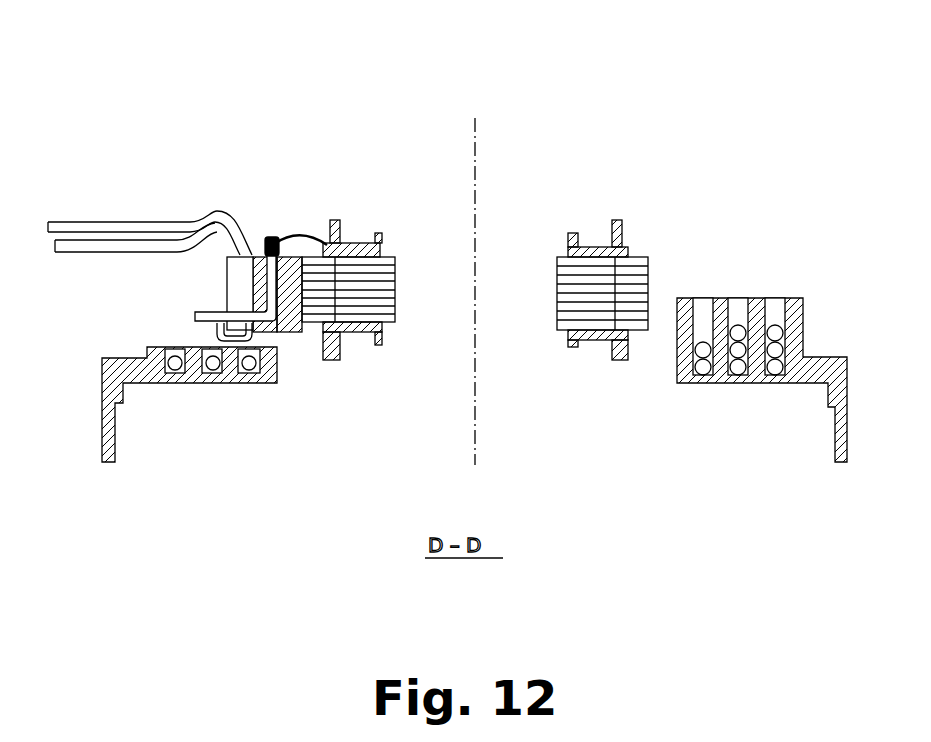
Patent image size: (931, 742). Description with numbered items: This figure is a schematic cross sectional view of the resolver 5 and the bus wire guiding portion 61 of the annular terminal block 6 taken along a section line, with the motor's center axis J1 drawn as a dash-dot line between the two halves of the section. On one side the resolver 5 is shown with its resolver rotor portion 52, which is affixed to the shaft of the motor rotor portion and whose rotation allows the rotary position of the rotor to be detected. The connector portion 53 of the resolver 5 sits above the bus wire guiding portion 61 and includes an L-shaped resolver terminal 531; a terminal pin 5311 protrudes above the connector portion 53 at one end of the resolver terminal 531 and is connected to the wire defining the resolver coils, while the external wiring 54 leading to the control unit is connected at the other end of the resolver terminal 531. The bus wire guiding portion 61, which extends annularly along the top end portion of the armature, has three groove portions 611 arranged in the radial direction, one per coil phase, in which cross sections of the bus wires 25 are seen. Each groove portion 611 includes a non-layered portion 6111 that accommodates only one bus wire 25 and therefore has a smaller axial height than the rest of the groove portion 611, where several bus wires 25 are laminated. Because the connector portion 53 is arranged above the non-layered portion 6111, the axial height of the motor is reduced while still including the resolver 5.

The resolver 5 is at (238, 234).
The resolver rotor portion 52 is at (350, 213).
The connector portion 53 is at (266, 260).
The resolver terminal 531 is at (280, 317).
The terminal pin 5311 is at (272, 237).
The external wiring 54 is at (75, 232).
The non-layered portion 6111 is at (173, 343).
The bus wire 25 is at (461, 312).
The annular terminal block 6 is at (696, 204).
The bus wire guiding portion 61 is at (746, 243).
The groove portion 611 is at (700, 293).
The rotation axis J1 is at (477, 153).